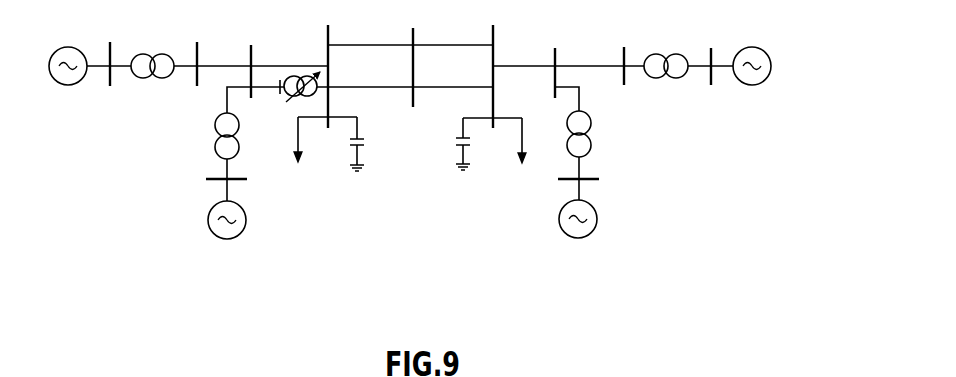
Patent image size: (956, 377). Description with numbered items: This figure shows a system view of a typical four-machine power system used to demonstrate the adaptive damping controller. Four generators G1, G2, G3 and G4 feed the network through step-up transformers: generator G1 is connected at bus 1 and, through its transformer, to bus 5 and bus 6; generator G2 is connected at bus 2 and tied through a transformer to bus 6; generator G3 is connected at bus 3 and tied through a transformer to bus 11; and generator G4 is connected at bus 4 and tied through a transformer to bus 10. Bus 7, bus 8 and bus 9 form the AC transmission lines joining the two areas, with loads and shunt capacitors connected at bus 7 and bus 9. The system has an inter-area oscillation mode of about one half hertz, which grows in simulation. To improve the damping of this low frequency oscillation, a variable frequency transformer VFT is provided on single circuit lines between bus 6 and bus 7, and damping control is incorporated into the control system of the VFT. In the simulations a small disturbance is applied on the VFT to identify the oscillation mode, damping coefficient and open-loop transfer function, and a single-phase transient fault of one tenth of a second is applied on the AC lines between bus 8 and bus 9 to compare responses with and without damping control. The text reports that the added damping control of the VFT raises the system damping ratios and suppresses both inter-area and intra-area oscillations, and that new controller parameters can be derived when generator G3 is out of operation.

The bus B1 1 is at (110, 56).
The bus B2 2 is at (233, 179).
The bus B3 3 is at (710, 56).
The bus B4 4 is at (584, 179).
The bus B5 5 is at (197, 56).
The bus B6 6 is at (251, 63).
The bus B7 7 is at (327, 68).
The bus B8 8 is at (413, 57).
The bus B9 9 is at (493, 68).
The bus B10 10 is at (555, 64).
The bus B11 11 is at (624, 58).
The generator G1 is at (68, 56).
The generator G2 is at (216, 220).
The generator G3 is at (763, 66).
The generator G4 is at (590, 219).
The variable frequency transformer VFT is at (289, 93).